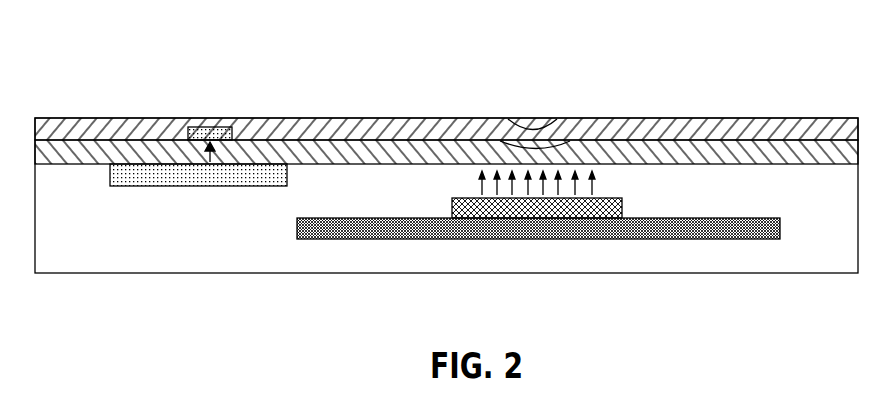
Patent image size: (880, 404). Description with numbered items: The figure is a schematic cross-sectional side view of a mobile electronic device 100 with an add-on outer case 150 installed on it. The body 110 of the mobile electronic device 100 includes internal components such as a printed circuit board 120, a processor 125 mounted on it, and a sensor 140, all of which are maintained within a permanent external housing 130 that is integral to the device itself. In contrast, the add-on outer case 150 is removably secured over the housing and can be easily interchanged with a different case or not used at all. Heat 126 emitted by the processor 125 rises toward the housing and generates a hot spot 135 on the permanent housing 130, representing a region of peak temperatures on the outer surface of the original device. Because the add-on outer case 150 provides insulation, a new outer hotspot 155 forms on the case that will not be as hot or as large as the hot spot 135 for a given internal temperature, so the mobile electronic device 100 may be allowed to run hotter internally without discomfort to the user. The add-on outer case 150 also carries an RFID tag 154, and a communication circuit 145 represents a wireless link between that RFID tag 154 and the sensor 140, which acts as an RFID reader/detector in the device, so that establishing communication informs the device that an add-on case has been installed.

The mobile electronic device 100 is at (446, 169).
The body 110 is at (837, 203).
The printed circuit board 120 is at (697, 239).
The processor 125 is at (452, 200).
The heat 126 is at (614, 182).
The permanent external housing 130 is at (62, 166).
The hot spot 135 is at (500, 143).
The sensor 140 is at (170, 187).
The communication circuit 145 is at (208, 158).
The add-on outer case 150 is at (468, 118).
The RFID tag 154 is at (210, 127).
The new outer hotspot 155 is at (560, 130).